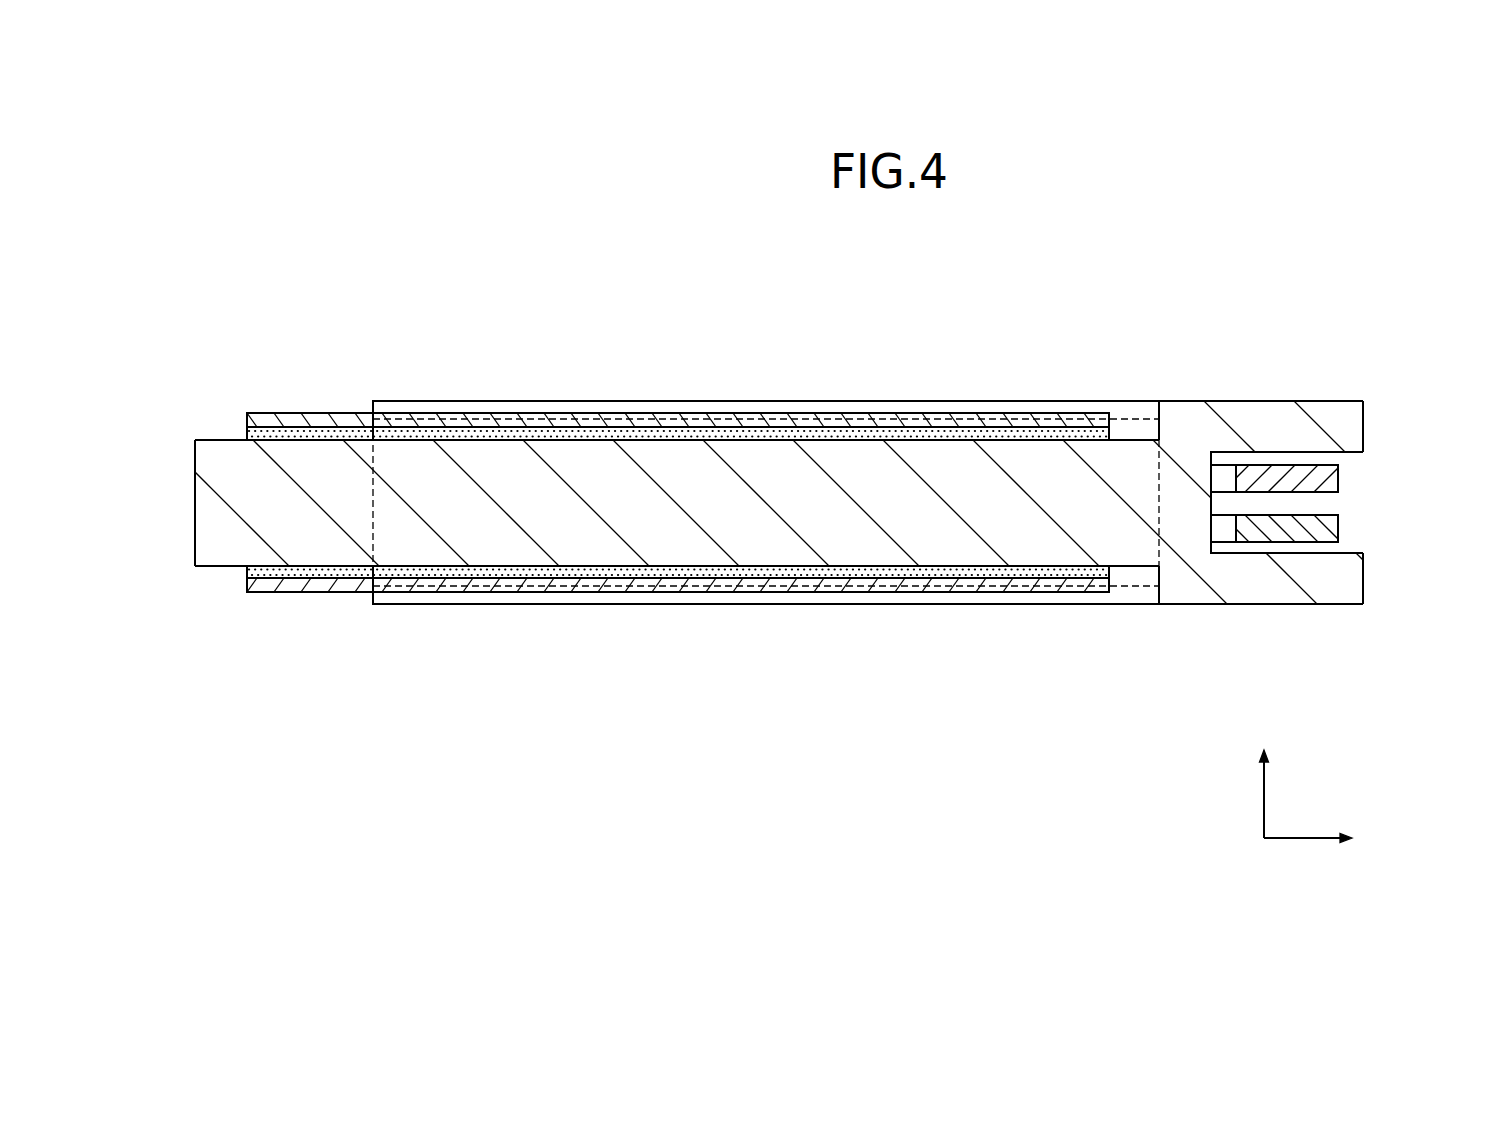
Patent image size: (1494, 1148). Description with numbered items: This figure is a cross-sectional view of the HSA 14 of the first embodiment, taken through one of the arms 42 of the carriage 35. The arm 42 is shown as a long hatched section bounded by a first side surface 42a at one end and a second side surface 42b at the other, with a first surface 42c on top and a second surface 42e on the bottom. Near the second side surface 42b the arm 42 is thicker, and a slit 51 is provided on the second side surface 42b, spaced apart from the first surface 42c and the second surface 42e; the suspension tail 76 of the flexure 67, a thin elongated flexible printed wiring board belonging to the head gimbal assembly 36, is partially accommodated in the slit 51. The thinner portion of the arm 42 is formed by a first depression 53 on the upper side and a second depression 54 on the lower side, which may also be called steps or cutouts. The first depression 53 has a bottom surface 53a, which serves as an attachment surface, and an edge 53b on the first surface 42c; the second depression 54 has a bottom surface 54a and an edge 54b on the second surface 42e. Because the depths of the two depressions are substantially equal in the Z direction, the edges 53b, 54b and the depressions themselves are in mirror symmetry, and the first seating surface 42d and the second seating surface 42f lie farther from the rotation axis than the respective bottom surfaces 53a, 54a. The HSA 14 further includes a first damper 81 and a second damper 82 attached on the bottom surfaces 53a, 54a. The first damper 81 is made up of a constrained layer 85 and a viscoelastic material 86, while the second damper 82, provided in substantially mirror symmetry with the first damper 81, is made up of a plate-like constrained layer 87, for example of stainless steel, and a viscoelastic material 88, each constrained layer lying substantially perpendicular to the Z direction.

The HSA 14 is at (200, 284).
The carriage 35 is at (1364, 397).
The head gimbal assembly 36 is at (1348, 475).
The arm 42 is at (218, 517).
The first side surface 42a is at (193, 547).
The second side surface 42b is at (1364, 420).
The first surface 42c is at (1243, 400).
The first seating surface 42d is at (1127, 418).
The second surface 42e is at (1238, 604).
The second seating surface 42f is at (1125, 586).
The slit 51 is at (1366, 503).
The first depression 53 is at (198, 416).
The bottom surface 53a is at (233, 440).
The edge 53b is at (1160, 400).
The second depression 54 is at (208, 603).
The bottom surface 54a is at (233, 567).
The edge 54b is at (1160, 603).
The flexure 67 is at (1293, 503).
The suspension tail 76 is at (1302, 478).
The first damper 81 is at (694, 408).
The second damper 82 is at (699, 598).
The constrained layer 85 is at (617, 418).
The viscoelastic material 86 is at (560, 437).
The constrained layer 87 is at (623, 590).
The viscoelastic material 88 is at (578, 570).